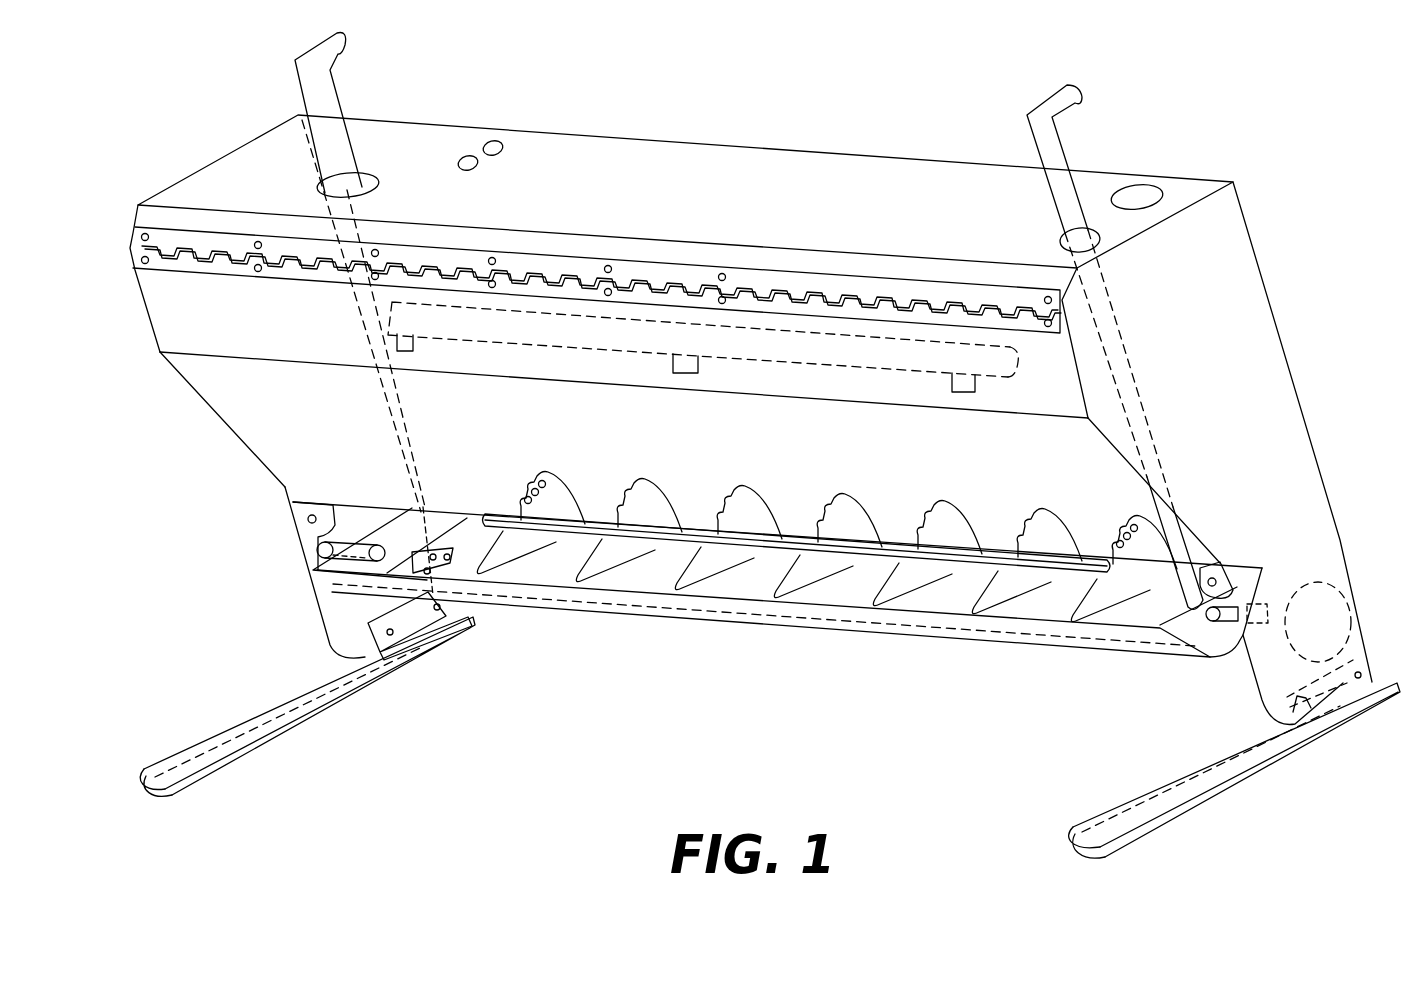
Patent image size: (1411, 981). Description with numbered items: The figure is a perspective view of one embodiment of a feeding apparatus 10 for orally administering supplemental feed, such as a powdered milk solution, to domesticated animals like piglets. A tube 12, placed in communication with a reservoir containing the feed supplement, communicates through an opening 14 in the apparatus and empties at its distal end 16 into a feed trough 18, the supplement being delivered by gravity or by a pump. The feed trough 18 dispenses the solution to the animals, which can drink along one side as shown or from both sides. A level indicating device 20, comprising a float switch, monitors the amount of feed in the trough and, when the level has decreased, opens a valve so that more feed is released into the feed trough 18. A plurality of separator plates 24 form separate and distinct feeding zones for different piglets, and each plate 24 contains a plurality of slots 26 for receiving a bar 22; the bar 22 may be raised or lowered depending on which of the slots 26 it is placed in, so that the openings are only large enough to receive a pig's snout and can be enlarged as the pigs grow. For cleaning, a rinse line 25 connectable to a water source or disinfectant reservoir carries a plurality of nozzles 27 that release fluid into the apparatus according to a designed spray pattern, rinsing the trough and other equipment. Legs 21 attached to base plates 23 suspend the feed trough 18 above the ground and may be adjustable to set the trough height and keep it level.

The feeding apparatus 10 is at (740, 112).
The tube 12 is at (1048, 100).
The opening 14 is at (1113, 237).
The distal end 16 is at (1220, 563).
The feed trough 18 is at (913, 622).
The level indicating device 20 is at (423, 490).
The legs 21 is at (353, 623).
The bar 22 is at (803, 528).
The base plates 23 is at (300, 707).
The separator plates 24 is at (652, 497).
The rinse line 25 is at (333, 87).
The slots 26 is at (541, 488).
The nozzles 27 is at (413, 352).